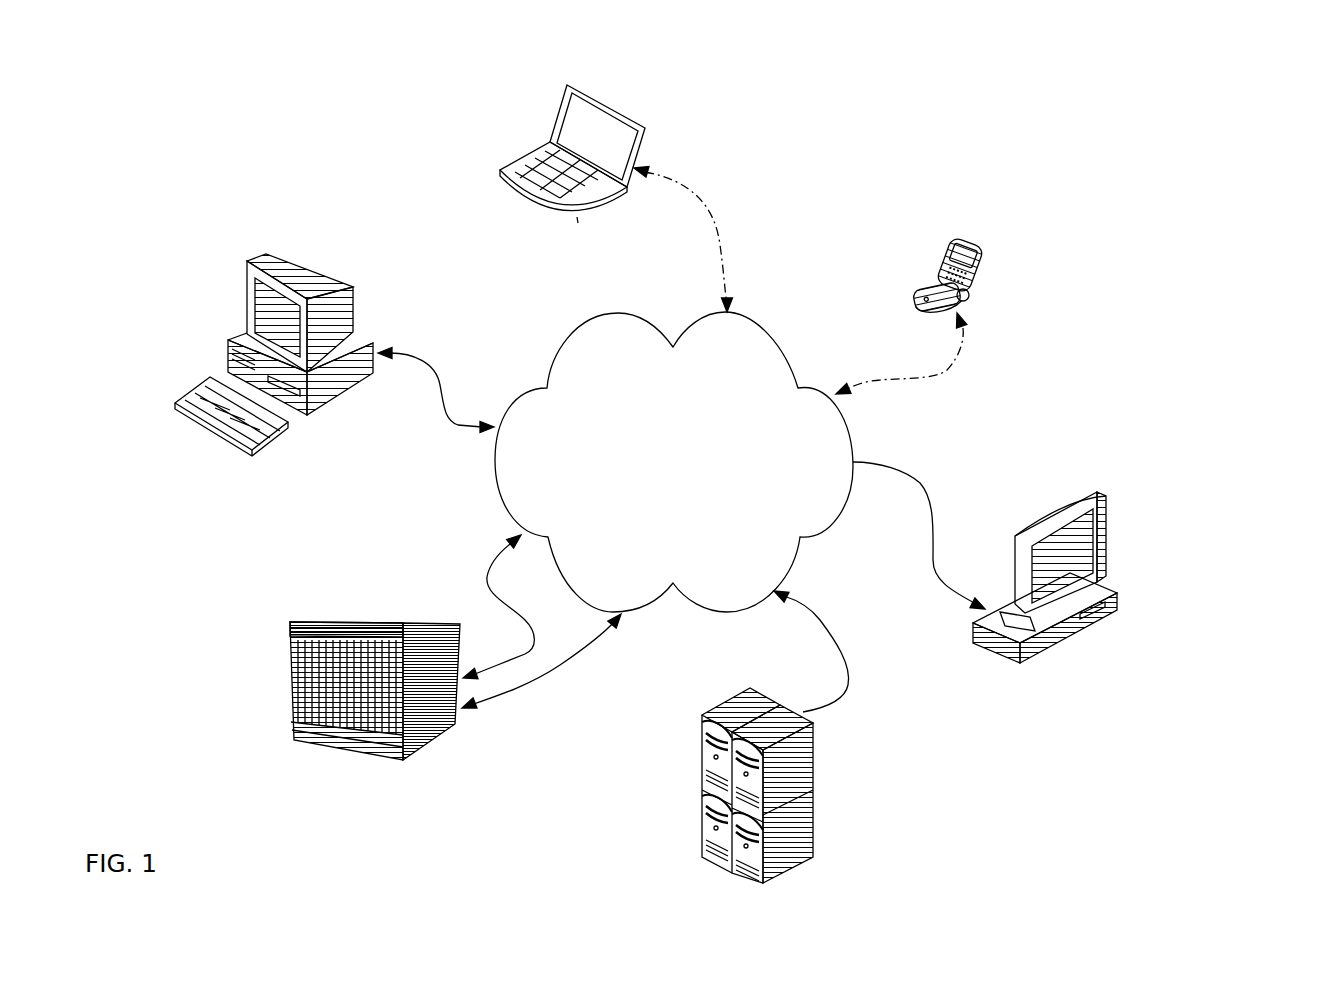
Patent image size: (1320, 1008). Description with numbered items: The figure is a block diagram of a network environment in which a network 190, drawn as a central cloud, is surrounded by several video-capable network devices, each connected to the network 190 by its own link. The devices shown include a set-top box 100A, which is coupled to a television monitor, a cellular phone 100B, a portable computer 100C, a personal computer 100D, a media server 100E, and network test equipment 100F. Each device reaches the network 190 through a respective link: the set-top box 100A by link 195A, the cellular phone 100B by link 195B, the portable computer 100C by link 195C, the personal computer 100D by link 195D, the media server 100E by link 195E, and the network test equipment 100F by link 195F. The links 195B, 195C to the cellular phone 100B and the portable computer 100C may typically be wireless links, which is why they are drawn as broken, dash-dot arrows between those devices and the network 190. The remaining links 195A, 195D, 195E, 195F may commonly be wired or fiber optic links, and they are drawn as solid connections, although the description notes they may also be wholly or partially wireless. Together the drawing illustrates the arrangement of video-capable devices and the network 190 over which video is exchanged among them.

The network 190 is at (674, 462).
The set-top box 100A is at (1117, 593).
The cellular phone 100B is at (983, 270).
The portable computer 100C is at (633, 117).
The personal computer 100D is at (353, 307).
The media server 100E is at (813, 748).
The network test equipment 100F is at (340, 748).
The link 195A is at (922, 487).
The link 195B is at (945, 368).
The link 195C is at (722, 237).
The link 195D is at (442, 418).
The link 195E is at (832, 636).
The link 195F is at (535, 640).